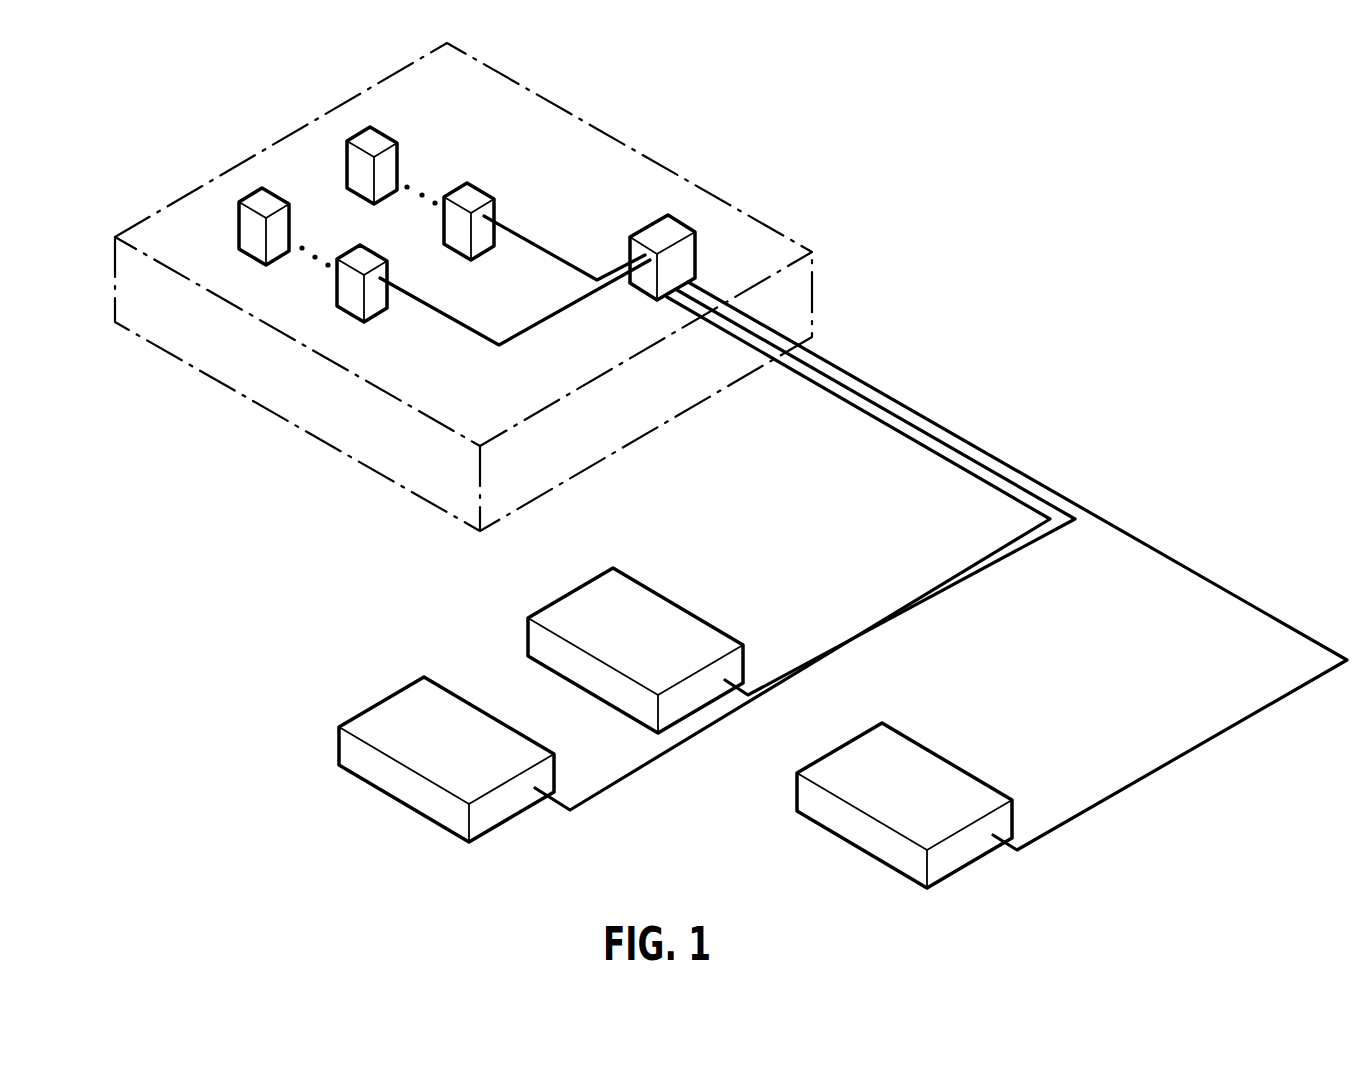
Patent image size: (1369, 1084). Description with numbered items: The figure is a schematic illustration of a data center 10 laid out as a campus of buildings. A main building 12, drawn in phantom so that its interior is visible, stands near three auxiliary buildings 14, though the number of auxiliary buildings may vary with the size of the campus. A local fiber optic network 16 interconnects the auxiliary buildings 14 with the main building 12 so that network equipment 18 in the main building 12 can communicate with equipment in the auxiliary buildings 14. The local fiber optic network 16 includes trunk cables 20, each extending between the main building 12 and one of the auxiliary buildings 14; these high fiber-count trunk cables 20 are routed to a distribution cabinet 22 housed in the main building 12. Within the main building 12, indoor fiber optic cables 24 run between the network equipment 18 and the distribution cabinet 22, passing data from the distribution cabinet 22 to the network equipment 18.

The data center 10 is at (106, 150).
The main building 12 is at (618, 137).
The auxiliary building 14 is at (383, 699).
The local fiber optic network 16 is at (941, 566).
The network equipment 18 is at (270, 191).
The trunk cable 20 is at (922, 594).
The distribution cabinet 22 is at (656, 222).
The indoor fiber optic cable 24 is at (440, 312).